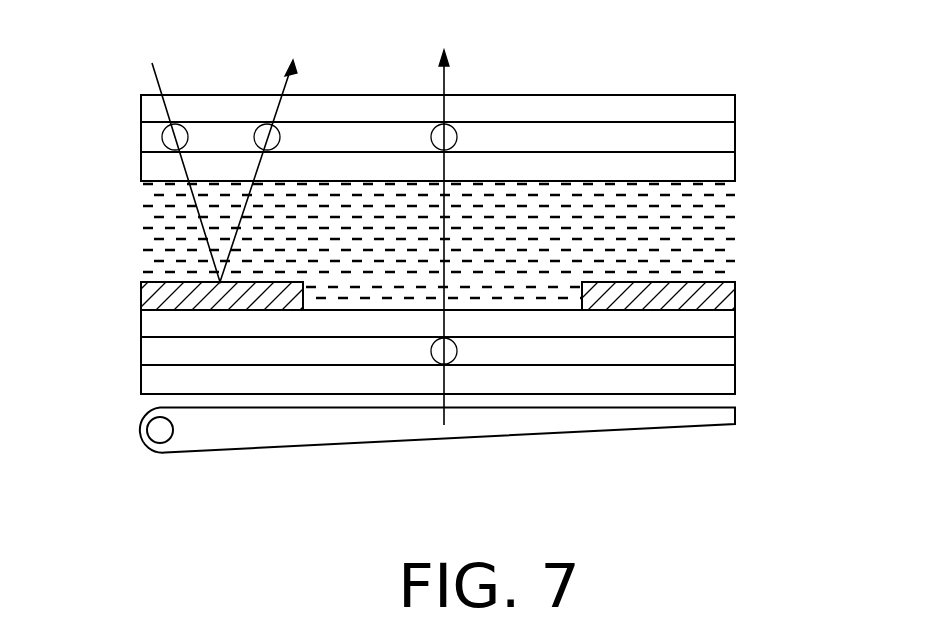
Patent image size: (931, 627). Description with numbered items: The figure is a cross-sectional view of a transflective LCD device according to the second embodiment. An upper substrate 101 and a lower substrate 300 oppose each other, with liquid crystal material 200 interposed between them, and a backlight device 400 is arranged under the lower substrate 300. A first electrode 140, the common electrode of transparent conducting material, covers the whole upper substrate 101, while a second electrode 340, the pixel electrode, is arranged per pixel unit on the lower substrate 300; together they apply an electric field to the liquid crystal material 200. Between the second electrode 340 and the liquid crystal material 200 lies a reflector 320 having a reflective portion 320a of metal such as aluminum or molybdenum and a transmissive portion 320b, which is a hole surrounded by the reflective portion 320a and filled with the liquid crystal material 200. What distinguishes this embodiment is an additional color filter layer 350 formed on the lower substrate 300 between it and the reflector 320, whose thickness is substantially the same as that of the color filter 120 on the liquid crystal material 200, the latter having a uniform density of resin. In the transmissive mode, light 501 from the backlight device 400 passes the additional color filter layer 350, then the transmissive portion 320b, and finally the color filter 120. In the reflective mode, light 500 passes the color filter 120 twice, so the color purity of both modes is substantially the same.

The upper substrate 101 is at (150, 110).
The color filter 120 is at (728, 137).
The first electrode 140 is at (718, 165).
The liquid crystal material 200 is at (163, 232).
The reflector 320 is at (512, 251).
The reflective portion 320a is at (673, 300).
The transmissive portion 320b is at (537, 290).
The lower substrate 300 is at (727, 383).
The second electrode 340 is at (720, 322).
The additional color filter layer 350 is at (727, 350).
The backlight device 400 is at (145, 428).
The light in the reflective mode 500 is at (214, 158).
The light in the transmissive mode 501 is at (444, 225).